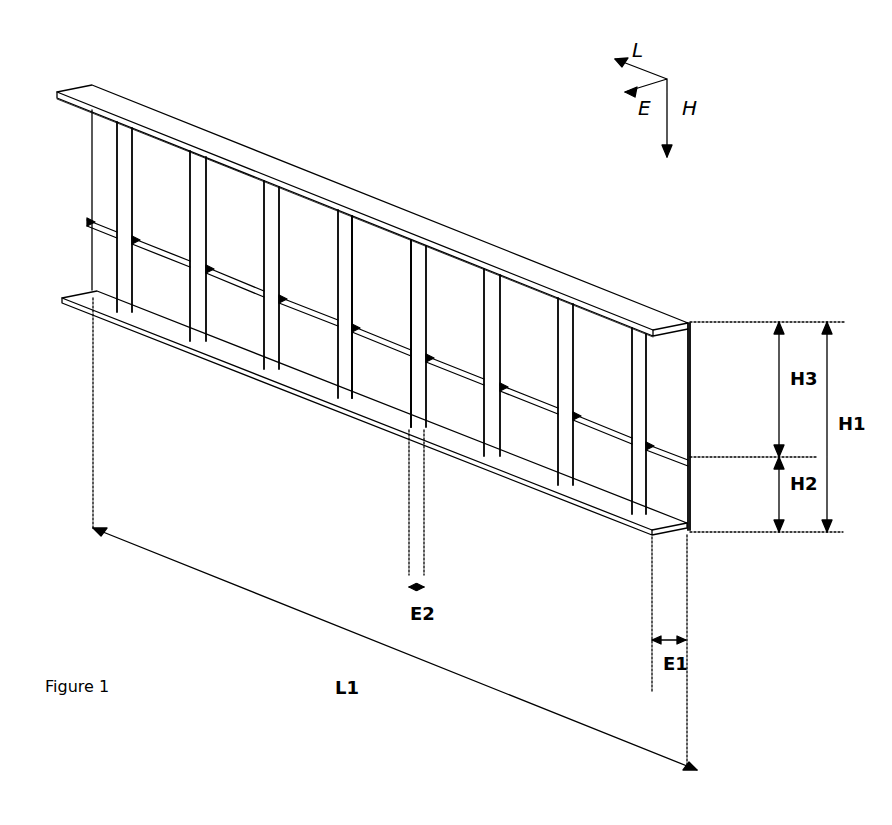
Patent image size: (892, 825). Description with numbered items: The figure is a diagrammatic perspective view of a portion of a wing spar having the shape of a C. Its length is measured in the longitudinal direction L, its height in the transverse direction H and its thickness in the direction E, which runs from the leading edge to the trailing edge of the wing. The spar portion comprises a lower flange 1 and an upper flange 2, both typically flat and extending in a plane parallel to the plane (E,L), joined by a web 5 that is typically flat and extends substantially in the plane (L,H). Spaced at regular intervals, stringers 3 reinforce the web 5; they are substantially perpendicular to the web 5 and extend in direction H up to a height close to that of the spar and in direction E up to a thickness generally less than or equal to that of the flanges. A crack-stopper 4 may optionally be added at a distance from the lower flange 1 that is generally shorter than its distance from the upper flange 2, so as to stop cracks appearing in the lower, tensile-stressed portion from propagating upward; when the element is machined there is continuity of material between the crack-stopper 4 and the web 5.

The lower flange 1 is at (292, 392).
The upper flange 2 is at (268, 165).
The stringers 3 is at (343, 257).
The crack-stopper 4 is at (590, 415).
The web 5 is at (376, 302).